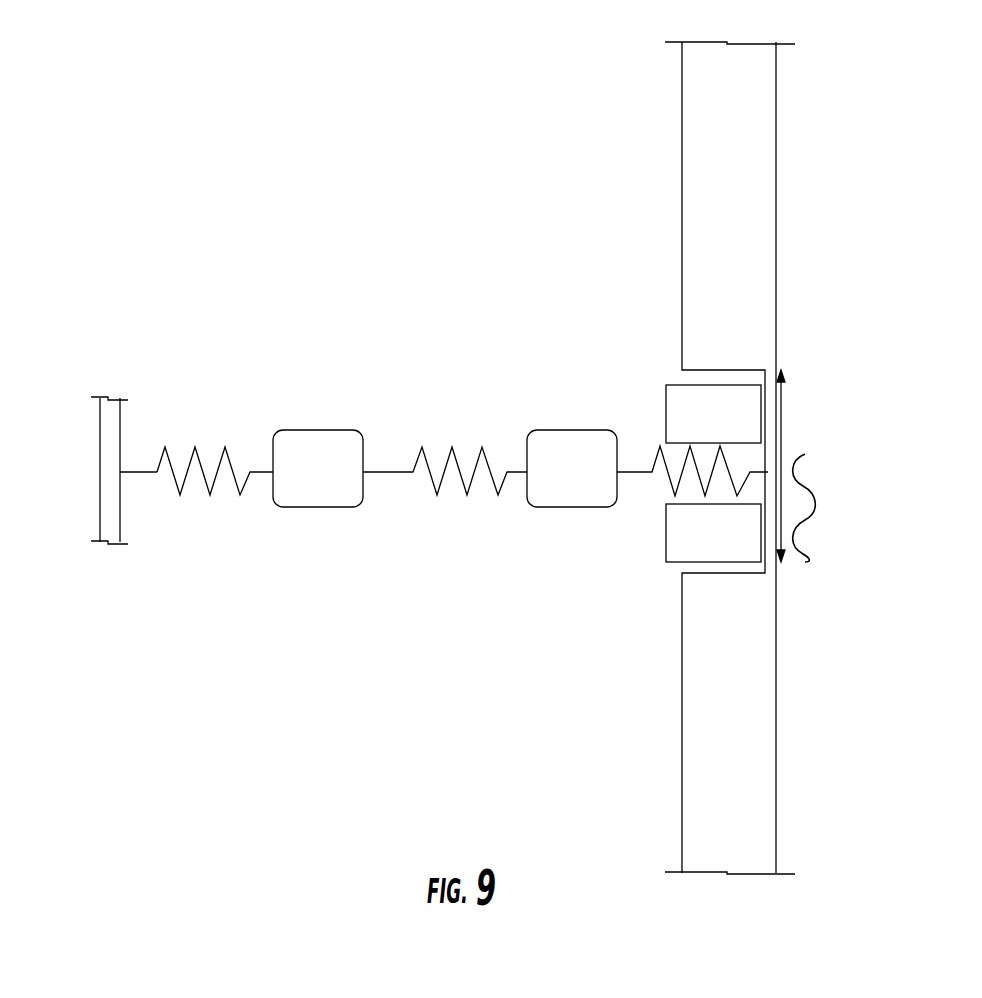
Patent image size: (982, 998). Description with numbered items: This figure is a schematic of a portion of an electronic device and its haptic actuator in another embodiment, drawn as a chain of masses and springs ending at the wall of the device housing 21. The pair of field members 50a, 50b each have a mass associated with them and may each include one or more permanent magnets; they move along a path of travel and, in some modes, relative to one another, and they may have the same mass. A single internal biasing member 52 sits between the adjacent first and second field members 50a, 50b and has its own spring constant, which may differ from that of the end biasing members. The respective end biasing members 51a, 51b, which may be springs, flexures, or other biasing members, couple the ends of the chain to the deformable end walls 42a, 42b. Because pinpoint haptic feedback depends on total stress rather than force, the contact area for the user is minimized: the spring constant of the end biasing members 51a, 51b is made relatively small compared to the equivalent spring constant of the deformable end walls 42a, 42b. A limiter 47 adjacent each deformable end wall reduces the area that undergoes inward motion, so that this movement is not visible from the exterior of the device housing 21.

The device housing 21 is at (777, 235).
The deformable end wall 42a is at (97, 443).
The deformable end wall 42b is at (766, 462).
The limiter 47 is at (666, 402).
The field member 50a is at (318, 430).
The field member 50b is at (572, 430).
The end biasing member 51a is at (195, 447).
The end biasing member 51b is at (668, 482).
The internal biasing member 52 is at (452, 447).